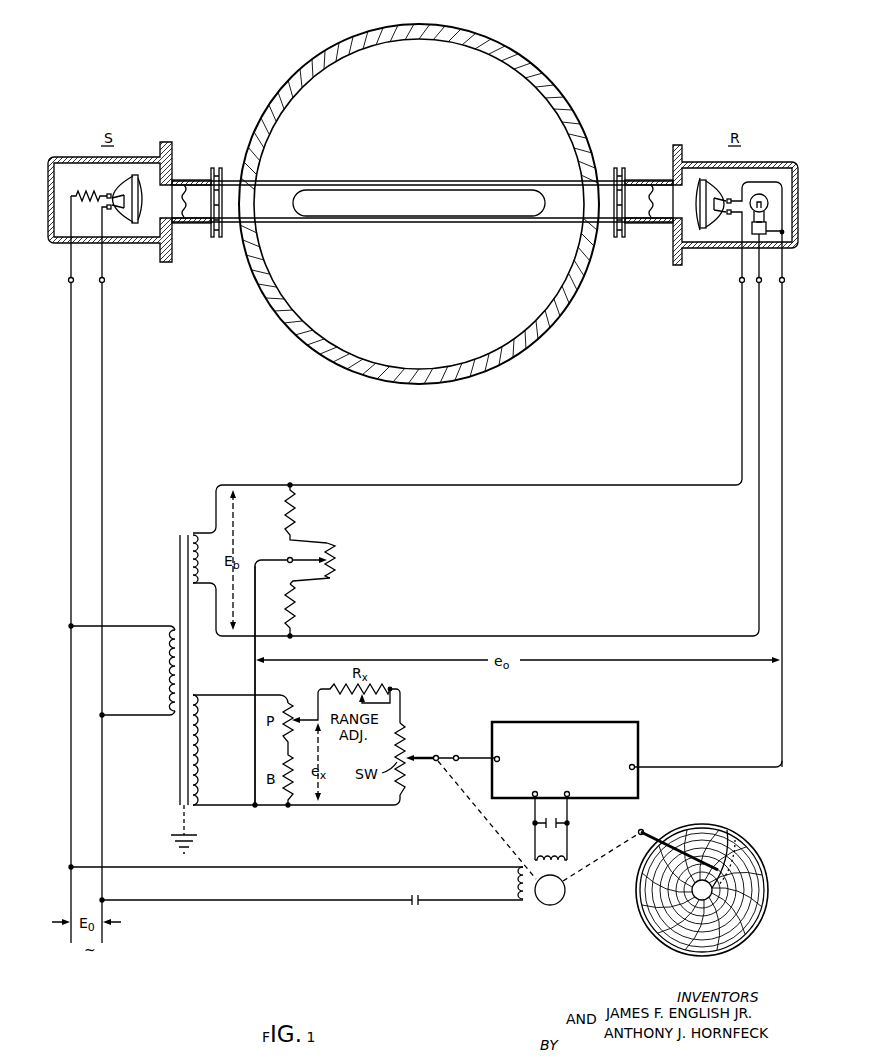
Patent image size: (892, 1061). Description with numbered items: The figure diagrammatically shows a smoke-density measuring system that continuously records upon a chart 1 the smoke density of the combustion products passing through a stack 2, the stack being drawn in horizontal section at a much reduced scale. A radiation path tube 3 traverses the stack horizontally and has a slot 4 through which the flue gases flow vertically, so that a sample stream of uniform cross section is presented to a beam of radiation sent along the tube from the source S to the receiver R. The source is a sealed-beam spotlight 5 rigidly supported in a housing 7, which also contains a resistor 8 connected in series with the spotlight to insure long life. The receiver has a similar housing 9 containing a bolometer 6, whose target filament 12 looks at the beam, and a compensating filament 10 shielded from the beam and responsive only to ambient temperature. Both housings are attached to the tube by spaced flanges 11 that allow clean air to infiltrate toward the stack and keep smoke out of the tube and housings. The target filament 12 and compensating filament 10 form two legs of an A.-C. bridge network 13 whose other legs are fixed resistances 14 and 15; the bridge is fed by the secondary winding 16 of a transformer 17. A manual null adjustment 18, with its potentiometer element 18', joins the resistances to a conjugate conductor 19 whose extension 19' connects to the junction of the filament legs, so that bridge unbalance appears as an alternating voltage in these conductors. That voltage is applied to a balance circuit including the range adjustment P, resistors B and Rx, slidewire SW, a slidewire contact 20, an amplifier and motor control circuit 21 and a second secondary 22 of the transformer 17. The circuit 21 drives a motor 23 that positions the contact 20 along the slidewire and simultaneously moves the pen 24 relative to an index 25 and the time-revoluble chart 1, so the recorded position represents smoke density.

The chart 1 is at (713, 825).
The stack 2 is at (568, 108).
The radiation path tube 3 is at (539, 226).
The slot 4 is at (419, 203).
The sealed-beam spotlight 5 is at (142, 214).
The bolometer 6 is at (700, 210).
The housing 7 is at (128, 245).
The resistor 8 is at (86, 192).
The housing 9 is at (708, 249).
The compensating filament 10 is at (764, 196).
The spaced flanges 11 is at (215, 167).
The target filament 12 is at (716, 201).
The A.-C. bridge network 13 is at (528, 577).
The fixed resistance leg 14 is at (296, 524).
The fixed resistance leg 15 is at (296, 621).
The secondary winding 16 is at (192, 533).
The transformer 17 is at (167, 616).
The manual null adjustment 18 is at (291, 671).
The null adjustment potentiometer element 18' is at (338, 550).
The conjugate conductor 19 is at (235, 685).
The conductor extension 19' is at (765, 725).
The slidewire contact 20 is at (437, 752).
The amplifier and motor control circuit 21 is at (574, 722).
The secondary 22 is at (206, 748).
The motor 23 is at (575, 930).
The pen 24 is at (652, 832).
The index 25 is at (740, 842).